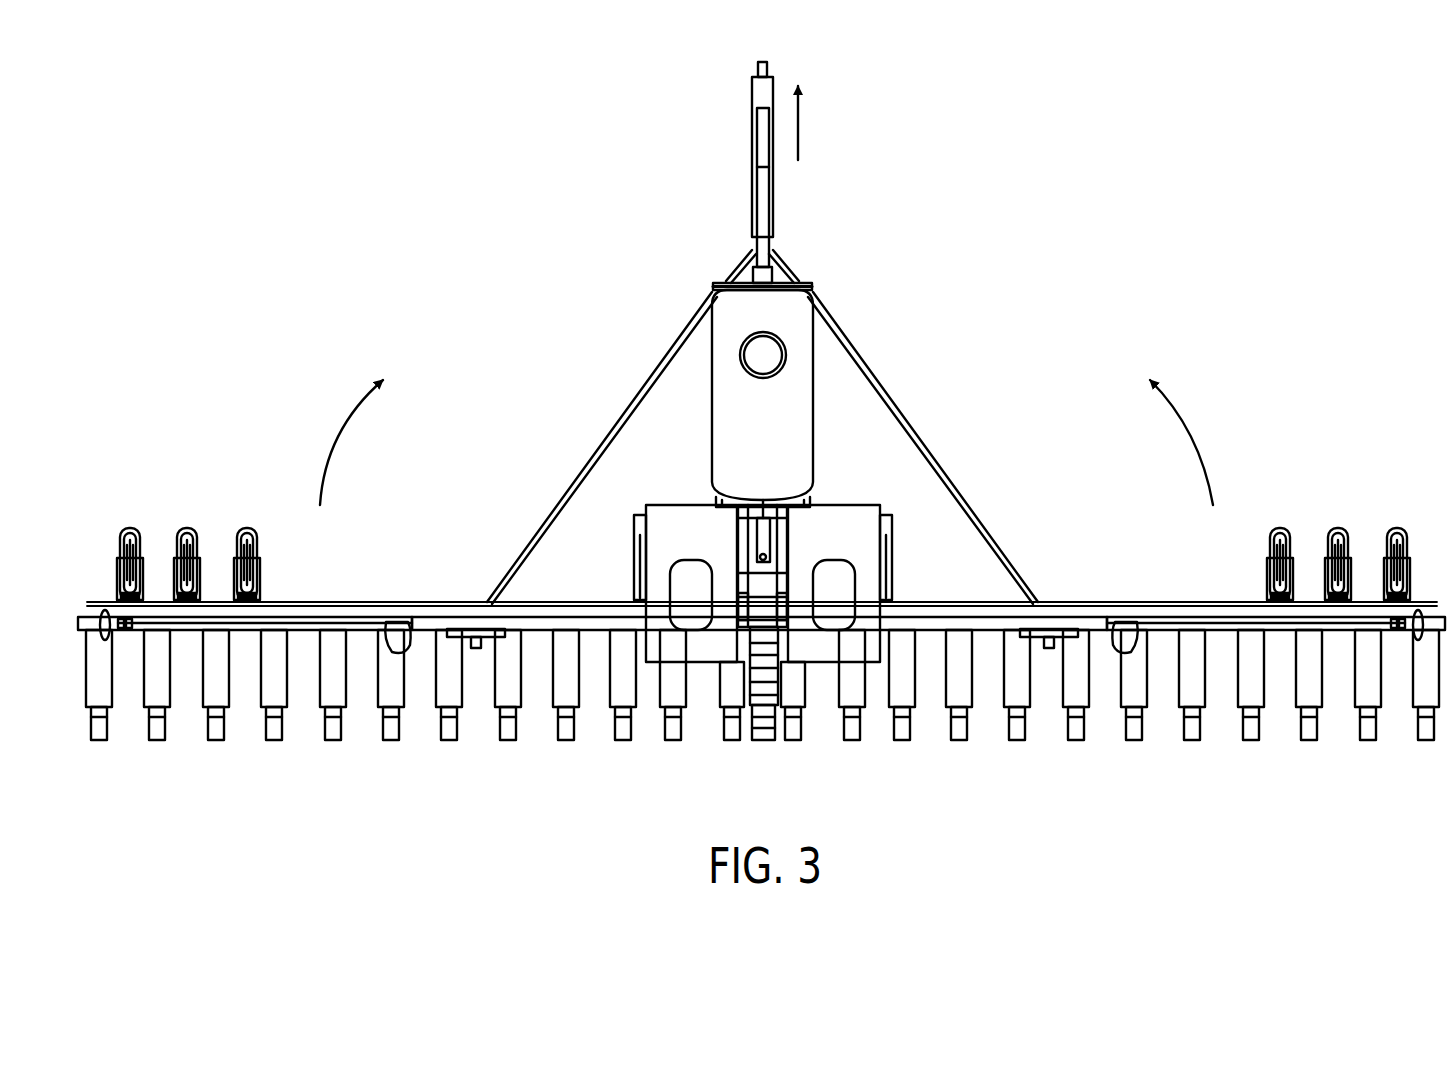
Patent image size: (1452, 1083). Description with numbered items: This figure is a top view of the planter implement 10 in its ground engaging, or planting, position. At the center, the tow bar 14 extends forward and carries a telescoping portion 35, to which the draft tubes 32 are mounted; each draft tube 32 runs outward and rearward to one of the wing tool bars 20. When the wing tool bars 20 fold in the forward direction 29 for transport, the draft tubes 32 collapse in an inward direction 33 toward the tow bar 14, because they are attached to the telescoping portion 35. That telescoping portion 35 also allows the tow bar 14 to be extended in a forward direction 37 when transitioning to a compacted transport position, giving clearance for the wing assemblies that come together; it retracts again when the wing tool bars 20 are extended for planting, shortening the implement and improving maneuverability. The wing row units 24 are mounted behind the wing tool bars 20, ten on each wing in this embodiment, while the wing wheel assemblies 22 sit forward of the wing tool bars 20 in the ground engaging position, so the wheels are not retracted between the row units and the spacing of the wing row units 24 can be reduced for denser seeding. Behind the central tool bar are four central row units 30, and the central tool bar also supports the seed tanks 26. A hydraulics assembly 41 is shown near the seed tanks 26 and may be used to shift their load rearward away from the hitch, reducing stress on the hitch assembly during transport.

The planter implement 10 is at (440, 210).
The tow bar 14 is at (762, 220).
The wing tool bars 20 is at (332, 610).
The wing wheel assemblies 22 is at (188, 508).
The wing row units 24 is at (218, 754).
The seed tanks 26 is at (820, 655).
The forward direction 29 is at (330, 440).
The central row units 30 is at (676, 752).
The draft tubes 32 is at (932, 445).
The inward direction 33 is at (700, 442).
The telescoping portion 35 is at (752, 195).
The forward direction 37 is at (800, 125).
The hydraulics assembly 41 is at (738, 540).